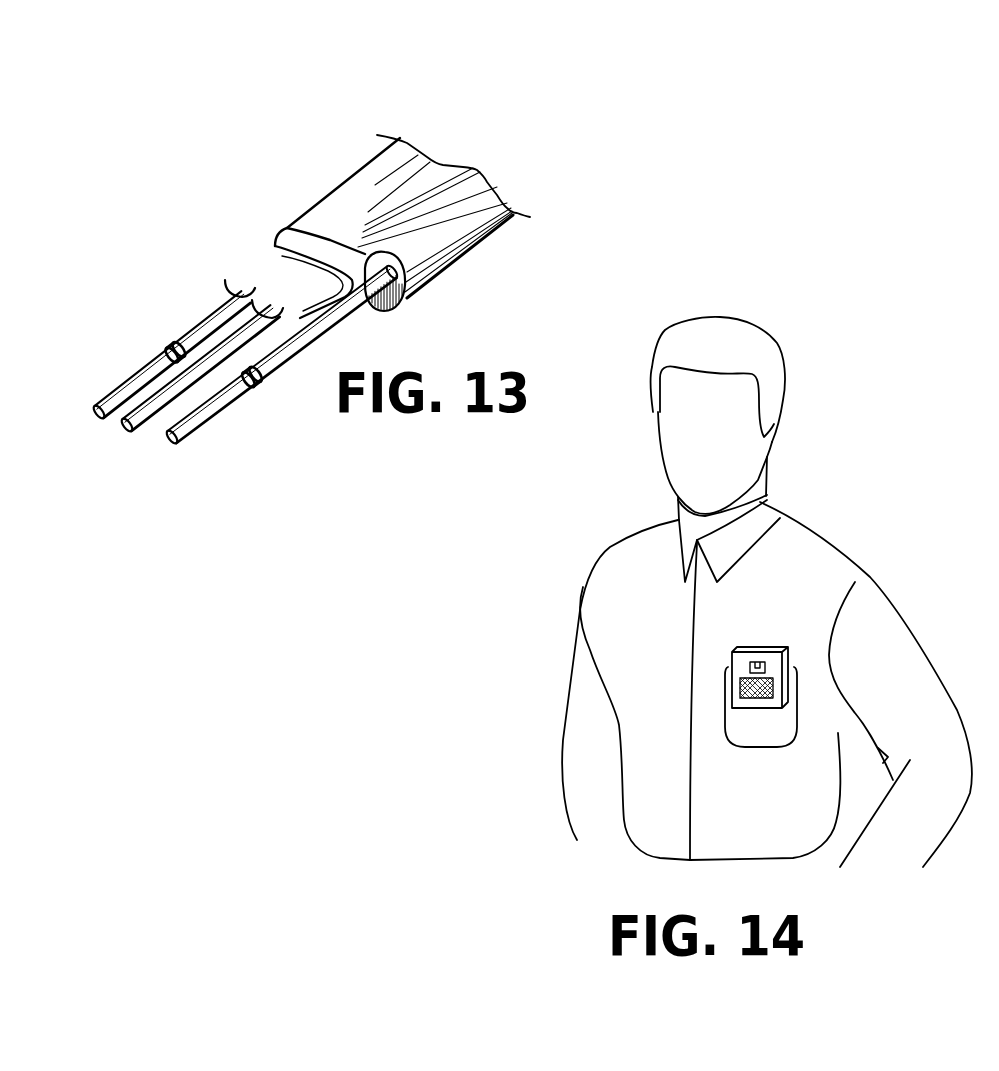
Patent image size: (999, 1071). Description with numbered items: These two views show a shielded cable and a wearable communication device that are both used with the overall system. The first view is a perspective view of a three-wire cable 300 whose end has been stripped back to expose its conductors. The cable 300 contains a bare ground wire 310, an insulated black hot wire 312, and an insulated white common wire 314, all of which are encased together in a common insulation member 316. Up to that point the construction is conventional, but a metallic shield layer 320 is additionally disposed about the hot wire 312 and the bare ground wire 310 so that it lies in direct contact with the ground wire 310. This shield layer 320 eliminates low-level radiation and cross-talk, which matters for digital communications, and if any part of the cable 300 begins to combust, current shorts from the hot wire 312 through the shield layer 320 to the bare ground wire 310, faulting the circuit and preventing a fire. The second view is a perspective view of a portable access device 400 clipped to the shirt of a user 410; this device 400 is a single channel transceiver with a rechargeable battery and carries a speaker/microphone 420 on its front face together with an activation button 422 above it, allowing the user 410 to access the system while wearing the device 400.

In FIG. 13, the three-wire cable 300 is at (302, 153).
In FIG. 13, the bare ground wire 310 is at (147, 410).
In FIG. 13, the insulated hot wire 312 is at (135, 382).
In FIG. 13, the insulated common wire 314 is at (200, 418).
In FIG. 13, the common insulation member 316 is at (420, 162).
In FIG. 13, the metallic shield layer 320 is at (273, 243).
In FIG. 14, the portable access device 400 is at (800, 600).
In FIG. 14, the user 410 is at (612, 641).
In FIG. 14, the speaker/microphone 420 is at (755, 697).
In FIG. 14, the activation button 422 is at (756, 660).